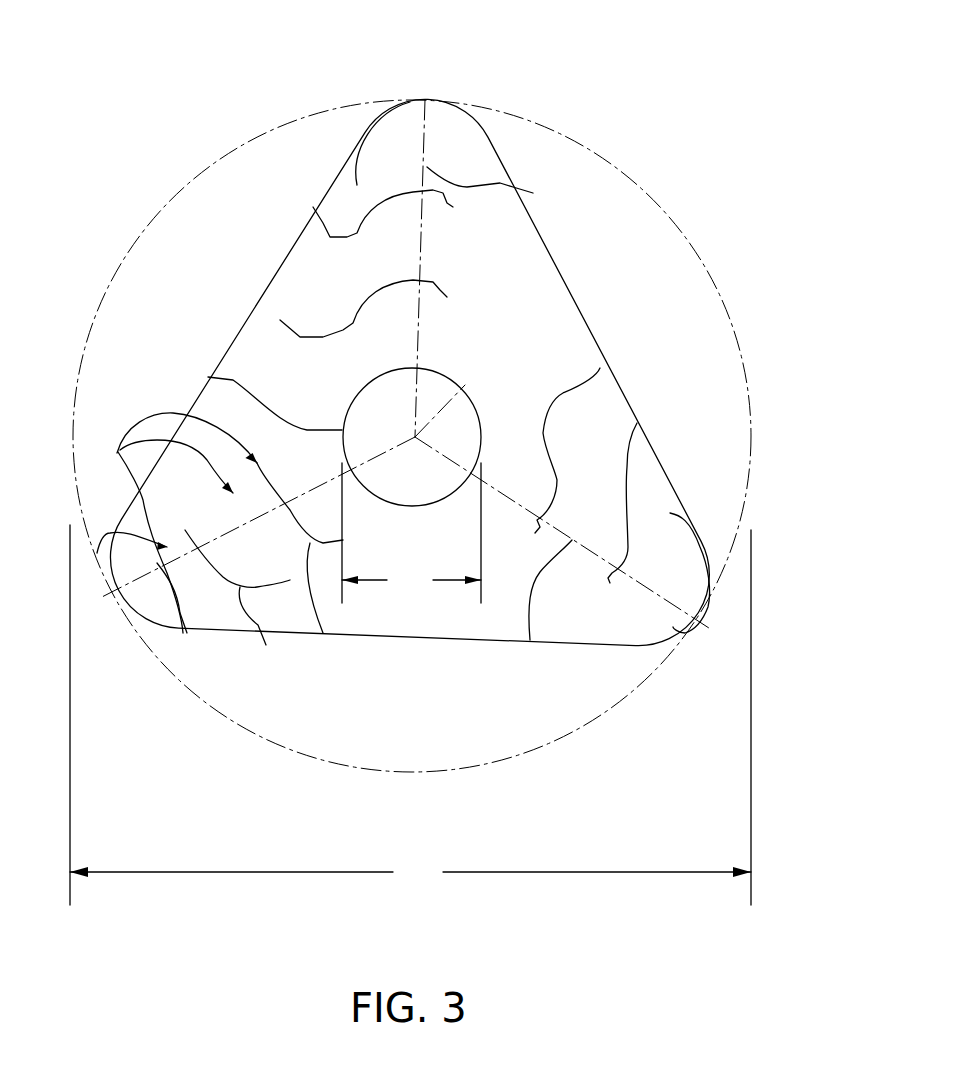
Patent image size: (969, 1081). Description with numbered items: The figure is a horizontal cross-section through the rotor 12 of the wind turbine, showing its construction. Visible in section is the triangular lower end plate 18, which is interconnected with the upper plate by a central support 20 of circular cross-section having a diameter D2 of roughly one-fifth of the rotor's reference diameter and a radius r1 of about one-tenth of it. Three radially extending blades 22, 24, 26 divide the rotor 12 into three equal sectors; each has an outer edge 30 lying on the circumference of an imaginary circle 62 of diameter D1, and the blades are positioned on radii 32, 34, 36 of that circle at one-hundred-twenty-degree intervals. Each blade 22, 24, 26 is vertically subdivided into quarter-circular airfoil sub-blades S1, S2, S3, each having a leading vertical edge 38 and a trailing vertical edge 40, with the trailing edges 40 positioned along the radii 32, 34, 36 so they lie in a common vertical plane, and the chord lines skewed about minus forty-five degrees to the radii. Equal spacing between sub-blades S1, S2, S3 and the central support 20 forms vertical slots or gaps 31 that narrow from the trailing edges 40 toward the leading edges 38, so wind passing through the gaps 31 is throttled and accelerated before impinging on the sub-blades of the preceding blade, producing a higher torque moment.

The rotor 12 is at (183, 235).
The triangular lower end plate 18 is at (620, 393).
The central support 20 is at (208, 377).
The blade 22 is at (283, 126).
The blade 24 is at (697, 460).
The blade 26 is at (248, 655).
The outer edge 30 is at (430, 100).
The vertical slots or gaps 31 is at (118, 452).
The radius 32 is at (533, 193).
The radius 34 is at (530, 640).
The radius 36 is at (187, 633).
The leading vertical edge 38 is at (367, 167).
The trailing vertical edge 40 is at (427, 103).
The imaginary circle 62 is at (593, 148).
The airfoil sub-blade S1 is at (383, 110).
The airfoil sub-blade S2 is at (313, 207).
The airfoil sub-blade S3 is at (253, 305).
The diameter of circle 62 D1 is at (410, 715).
The central support diameter D2 is at (411, 534).
The radius of central support r1 is at (447, 388).